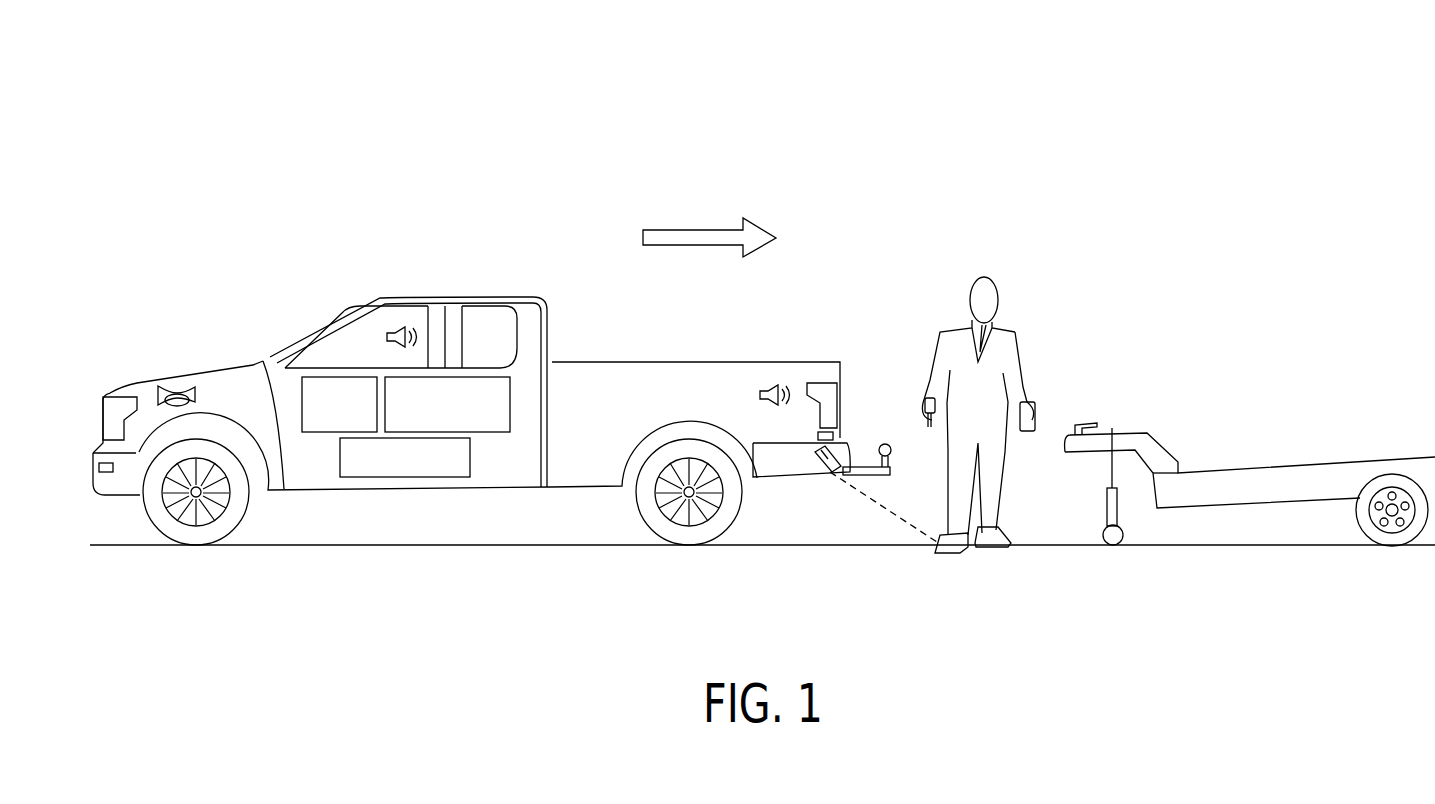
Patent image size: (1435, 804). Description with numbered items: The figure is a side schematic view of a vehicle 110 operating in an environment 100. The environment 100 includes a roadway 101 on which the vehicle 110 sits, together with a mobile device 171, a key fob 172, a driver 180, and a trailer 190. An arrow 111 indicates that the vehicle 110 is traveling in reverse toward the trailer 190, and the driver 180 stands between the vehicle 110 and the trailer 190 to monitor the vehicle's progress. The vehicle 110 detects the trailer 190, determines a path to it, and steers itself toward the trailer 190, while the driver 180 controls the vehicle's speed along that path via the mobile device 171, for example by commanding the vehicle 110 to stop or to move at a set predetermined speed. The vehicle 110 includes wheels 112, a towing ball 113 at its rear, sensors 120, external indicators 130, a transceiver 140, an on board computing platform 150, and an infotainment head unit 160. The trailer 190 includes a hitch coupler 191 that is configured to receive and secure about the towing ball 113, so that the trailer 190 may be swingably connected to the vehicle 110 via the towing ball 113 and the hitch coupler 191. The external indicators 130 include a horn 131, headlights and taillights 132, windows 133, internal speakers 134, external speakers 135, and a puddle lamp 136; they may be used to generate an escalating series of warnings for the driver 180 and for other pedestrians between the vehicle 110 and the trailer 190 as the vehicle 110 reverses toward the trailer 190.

The environment 100 is at (291, 148).
The roadway 101 is at (438, 545).
The vehicle 110 is at (285, 325).
The arrow 111 is at (694, 228).
The wheels 112 is at (208, 538).
The towing ball 113 is at (885, 444).
The sensors 120 is at (107, 474).
The external indicators 130 is at (368, 256).
The horn 131 is at (180, 388).
The headlights and taillights 132 is at (120, 400).
The windows 133 is at (348, 345).
The internal speakers 134 is at (398, 326).
The external speakers 135 is at (758, 384).
The puddle lamp 136 is at (826, 476).
The transceiver 140 is at (447, 404).
The on board computing platform 150 is at (339, 404).
The infotainment head unit 160 is at (405, 457).
The mobile device 171 is at (1040, 413).
The key fob 172 is at (918, 398).
The driver 180 is at (994, 277).
The trailer 190 is at (1270, 438).
The hitch coupler 191 is at (1075, 444).